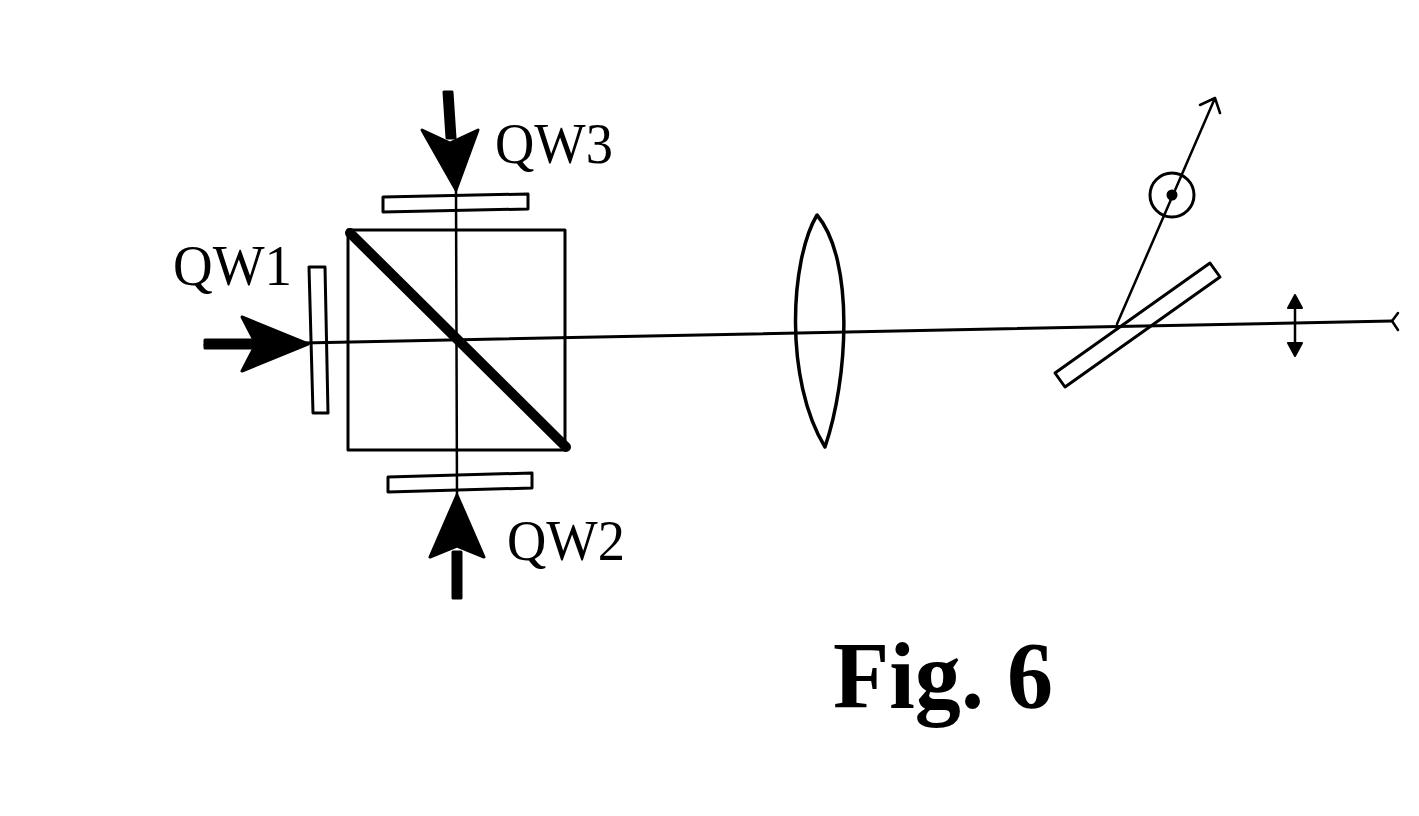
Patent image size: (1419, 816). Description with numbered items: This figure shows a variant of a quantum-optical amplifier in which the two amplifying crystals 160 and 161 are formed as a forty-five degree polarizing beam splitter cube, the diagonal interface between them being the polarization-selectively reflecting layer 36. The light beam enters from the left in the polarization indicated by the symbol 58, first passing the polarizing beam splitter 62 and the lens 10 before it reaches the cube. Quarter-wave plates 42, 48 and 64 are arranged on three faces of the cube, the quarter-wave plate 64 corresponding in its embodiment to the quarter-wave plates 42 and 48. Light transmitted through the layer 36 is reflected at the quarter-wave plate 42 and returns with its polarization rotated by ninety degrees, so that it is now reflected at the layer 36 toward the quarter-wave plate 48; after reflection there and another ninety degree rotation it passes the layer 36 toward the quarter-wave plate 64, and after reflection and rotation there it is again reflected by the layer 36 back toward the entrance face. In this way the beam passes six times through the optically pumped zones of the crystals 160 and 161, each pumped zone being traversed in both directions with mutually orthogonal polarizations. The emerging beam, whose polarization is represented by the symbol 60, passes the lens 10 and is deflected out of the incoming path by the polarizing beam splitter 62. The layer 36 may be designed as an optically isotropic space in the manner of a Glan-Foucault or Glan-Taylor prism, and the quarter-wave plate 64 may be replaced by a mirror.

The lens 10 is at (813, 263).
The polarization-selectively reflecting layer 36 is at (568, 447).
The quarter-wave plate 42 is at (318, 390).
The quarter-wave plate 48 is at (404, 483).
The polarization symbol 58 is at (1298, 297).
The polarization symbol 60 is at (1197, 197).
The polarizing beam splitter 62 is at (1072, 370).
The quarter-wave plate 64 is at (528, 200).
The crystal 160 is at (535, 296).
The crystal 161 is at (377, 422).